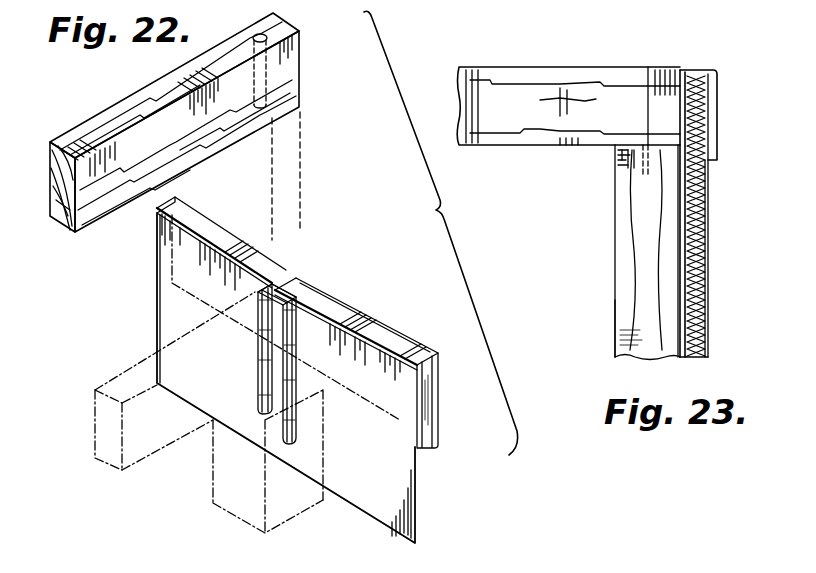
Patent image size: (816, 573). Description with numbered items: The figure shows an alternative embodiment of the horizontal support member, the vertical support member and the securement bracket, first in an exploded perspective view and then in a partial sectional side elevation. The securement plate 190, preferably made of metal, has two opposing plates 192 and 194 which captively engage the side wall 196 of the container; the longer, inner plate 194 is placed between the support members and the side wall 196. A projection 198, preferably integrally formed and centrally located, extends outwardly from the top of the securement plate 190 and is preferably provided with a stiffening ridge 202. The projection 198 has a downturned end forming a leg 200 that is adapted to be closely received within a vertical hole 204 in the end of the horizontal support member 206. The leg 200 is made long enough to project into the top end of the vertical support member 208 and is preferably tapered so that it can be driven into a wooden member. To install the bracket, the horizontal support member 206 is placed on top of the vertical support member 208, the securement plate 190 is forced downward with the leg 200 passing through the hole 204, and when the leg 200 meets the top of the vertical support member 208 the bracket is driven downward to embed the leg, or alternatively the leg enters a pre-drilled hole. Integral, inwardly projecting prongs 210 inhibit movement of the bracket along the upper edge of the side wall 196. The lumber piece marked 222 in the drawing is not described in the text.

In FIG. 22, the securement plate 190 is at (405, 337).
In FIG. 22, the opposing plate 192 is at (440, 413).
In FIG. 23, the opposing plate 192 is at (718, 129).
In FIG. 22, the inner plate 194 is at (393, 463).
In FIG. 23, the inner plate 194 is at (675, 224).
In FIG. 23, the side wall 196 is at (711, 291).
In FIG. 22, the projection 198 is at (268, 283).
In FIG. 23, the projection 198 is at (657, 63).
In FIG. 22, the downturned leg 200 is at (258, 365).
In FIG. 22, the stiffening ridge 202 is at (280, 291).
In FIG. 22, the vertical hole 204 is at (286, 29).
In FIG. 22, the horizontal support member 206 is at (304, 78).
In FIG. 23, the horizontal support member 206 is at (538, 118).
In FIG. 23, the vertical support member 208 is at (615, 315).
In FIG. 22, the inwardly projecting prongs 210 is at (197, 215).
In FIG. 22, the lumber support 222 is at (160, 572).